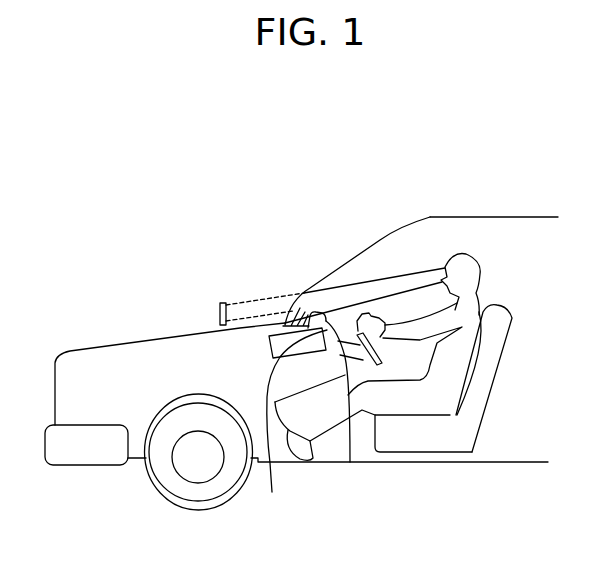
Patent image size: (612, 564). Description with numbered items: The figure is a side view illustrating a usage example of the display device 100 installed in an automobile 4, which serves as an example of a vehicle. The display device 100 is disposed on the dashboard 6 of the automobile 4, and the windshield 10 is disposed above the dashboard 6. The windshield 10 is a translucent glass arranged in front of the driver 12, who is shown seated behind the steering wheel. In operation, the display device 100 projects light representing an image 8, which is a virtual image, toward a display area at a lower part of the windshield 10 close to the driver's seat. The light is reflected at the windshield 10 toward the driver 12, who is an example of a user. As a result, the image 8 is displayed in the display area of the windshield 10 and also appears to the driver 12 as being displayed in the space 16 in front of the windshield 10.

The automobile 4 is at (518, 217).
The dashboard 6 is at (350, 462).
The image 8 is at (220, 304).
The windshield 10 is at (401, 231).
The driver 12 is at (470, 270).
The space 16 is at (271, 248).
The display device 100 is at (290, 424).